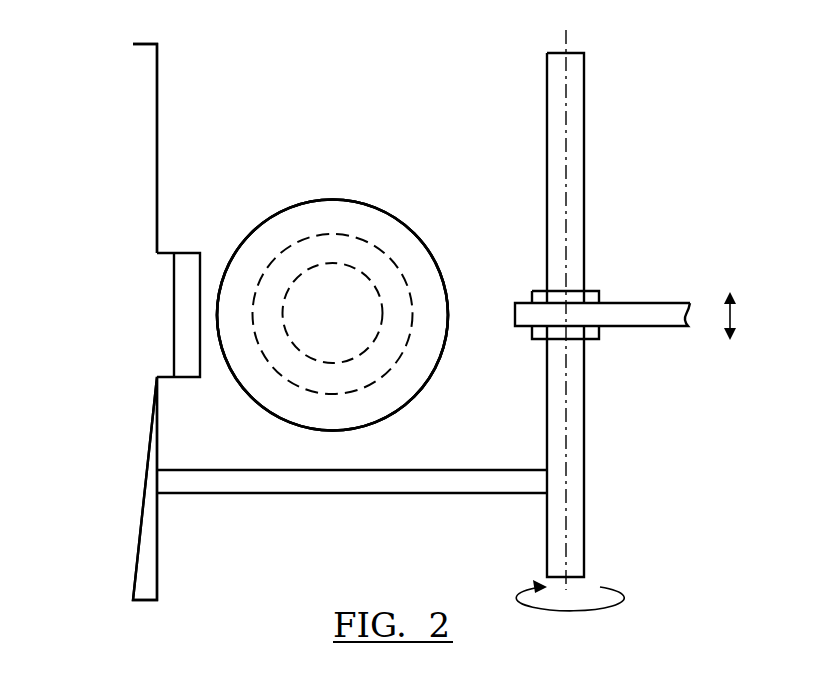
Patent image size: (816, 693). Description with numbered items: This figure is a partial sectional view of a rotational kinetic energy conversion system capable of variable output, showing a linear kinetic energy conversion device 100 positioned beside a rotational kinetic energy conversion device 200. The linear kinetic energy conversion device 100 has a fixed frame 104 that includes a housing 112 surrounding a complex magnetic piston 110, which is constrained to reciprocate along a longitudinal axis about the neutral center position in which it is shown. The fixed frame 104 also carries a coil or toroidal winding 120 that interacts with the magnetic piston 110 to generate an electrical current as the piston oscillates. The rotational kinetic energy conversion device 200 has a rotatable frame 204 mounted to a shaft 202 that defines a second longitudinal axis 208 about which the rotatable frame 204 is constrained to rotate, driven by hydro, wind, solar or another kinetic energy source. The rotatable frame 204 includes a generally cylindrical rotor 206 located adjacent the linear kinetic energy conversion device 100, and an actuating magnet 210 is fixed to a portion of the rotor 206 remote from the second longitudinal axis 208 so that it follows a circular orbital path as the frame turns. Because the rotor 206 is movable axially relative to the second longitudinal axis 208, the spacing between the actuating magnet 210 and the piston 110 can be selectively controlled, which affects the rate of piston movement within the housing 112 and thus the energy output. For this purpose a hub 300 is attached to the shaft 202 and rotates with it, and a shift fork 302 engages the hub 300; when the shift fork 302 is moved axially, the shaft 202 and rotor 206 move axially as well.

The linear kinetic energy conversion device 100 is at (338, 192).
The fixed frame 104 is at (275, 212).
The complex magnetic piston 110 is at (335, 363).
The housing 112 is at (252, 232).
The coil or toroidal winding 120 is at (297, 395).
The rotational kinetic energy conversion device 200 is at (602, 320).
The shaft 202 is at (584, 203).
The rotatable frame 204 is at (134, 553).
The rotor 206 is at (134, 423).
The second longitudinal axis 208 is at (567, 521).
The actuating magnet 210 is at (187, 252).
The hub 300 is at (592, 339).
The shift fork 302 is at (655, 326).